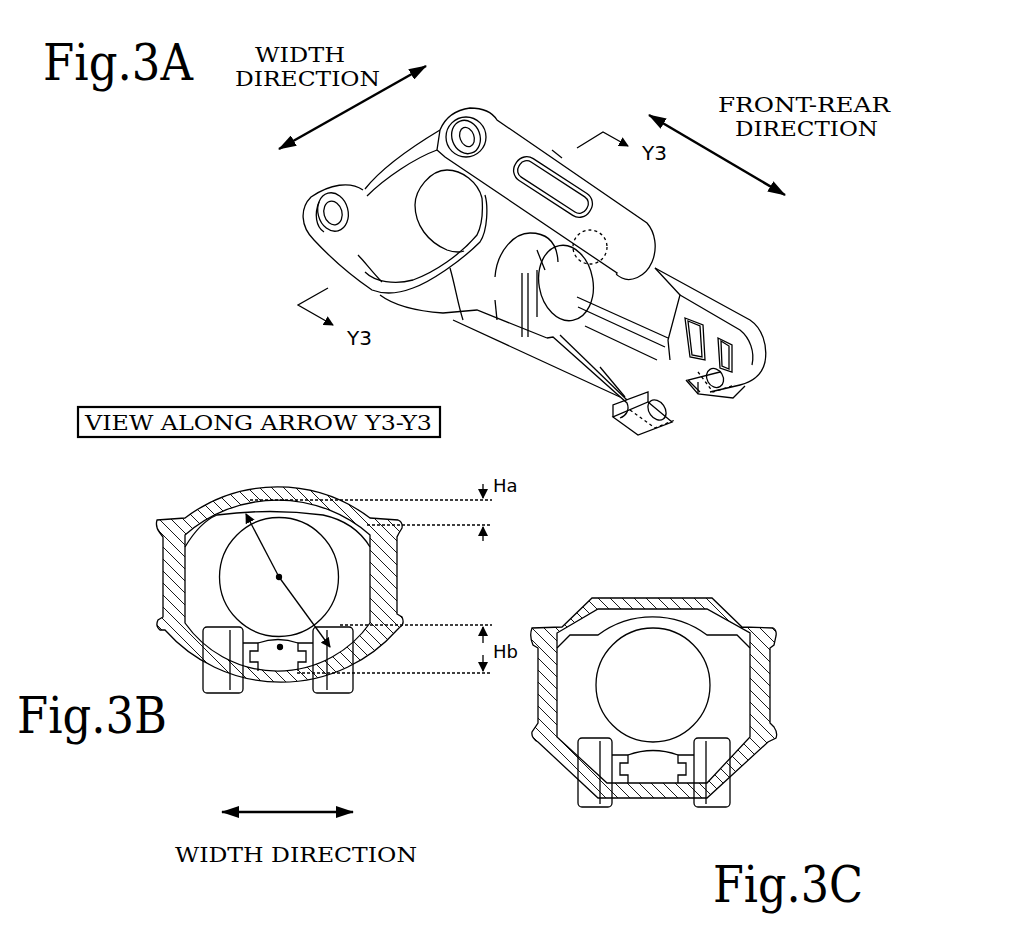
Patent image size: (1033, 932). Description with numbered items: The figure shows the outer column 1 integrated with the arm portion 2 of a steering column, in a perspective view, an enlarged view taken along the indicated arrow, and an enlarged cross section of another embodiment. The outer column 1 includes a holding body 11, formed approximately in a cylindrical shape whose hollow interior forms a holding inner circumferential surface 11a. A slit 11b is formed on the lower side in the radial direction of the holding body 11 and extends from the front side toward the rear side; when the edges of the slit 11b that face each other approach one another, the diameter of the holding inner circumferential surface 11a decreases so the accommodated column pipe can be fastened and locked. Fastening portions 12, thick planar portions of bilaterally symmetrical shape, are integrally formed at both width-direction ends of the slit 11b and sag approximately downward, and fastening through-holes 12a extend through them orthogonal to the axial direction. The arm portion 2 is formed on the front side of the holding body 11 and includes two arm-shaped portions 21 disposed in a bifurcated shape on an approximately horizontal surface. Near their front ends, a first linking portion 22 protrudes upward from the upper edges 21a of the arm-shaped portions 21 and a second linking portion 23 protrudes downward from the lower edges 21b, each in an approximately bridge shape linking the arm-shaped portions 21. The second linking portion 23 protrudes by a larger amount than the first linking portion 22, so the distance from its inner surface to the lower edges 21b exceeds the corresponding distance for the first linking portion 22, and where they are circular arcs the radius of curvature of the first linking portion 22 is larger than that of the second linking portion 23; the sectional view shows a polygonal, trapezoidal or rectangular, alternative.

In FIG. 3A, the outer column 1 is at (690, 290).
In FIG. 3A, the arm portion 2 is at (535, 136).
In FIG. 3B, the arm portion 2 is at (353, 500).
In FIG. 3C, the arm portion 2 is at (730, 612).
In FIG. 3A, the holding body 11 is at (720, 297).
In FIG. 3B, the holding body 11 is at (268, 508).
In FIG. 3C, the holding body 11 is at (636, 617).
In FIG. 3A, the holding inner circumferential surface 11a is at (548, 308).
In FIG. 3B, the holding inner circumferential surface 11a is at (338, 548).
In FIG. 3C, the holding inner circumferential surface 11a is at (700, 660).
In FIG. 3A, the slit 11b is at (605, 337).
In FIG. 3B, the slit 11b is at (283, 662).
In FIG. 3C, the slit 11b is at (643, 768).
In FIG. 3A, the fastening portion 12 is at (647, 440).
In FIG. 3B, the fastening portion 12 is at (218, 696).
In FIG. 3C, the fastening portion 12 is at (595, 807).
In FIG. 3A, the fastening through-hole 12a is at (655, 423).
In FIG. 3A, the arm-shaped portion 21 is at (502, 135).
In FIG. 3B, the arm-shaped portion 21 is at (163, 606).
In FIG. 3C, the arm-shaped portion 21 is at (542, 708).
In FIG. 3A, the upper edge 21a is at (552, 150).
In FIG. 3B, the upper edge 21a is at (385, 520).
In FIG. 3C, the upper edge 21a is at (771, 628).
In FIG. 3A, the lower edge 21b is at (583, 250).
In FIG. 3B, the lower edge 21b is at (392, 635).
In FIG. 3C, the lower edge 21b is at (765, 745).
In FIG. 3A, the first linking portion 22 is at (413, 140).
In FIG. 3B, the first linking portion 22 is at (298, 493).
In FIG. 3C, the first linking portion 22 is at (682, 598).
In FIG. 3A, the second linking portion 23 is at (455, 307).
In FIG. 3B, the second linking portion 23 is at (297, 680).
In FIG. 3C, the second linking portion 23 is at (670, 798).